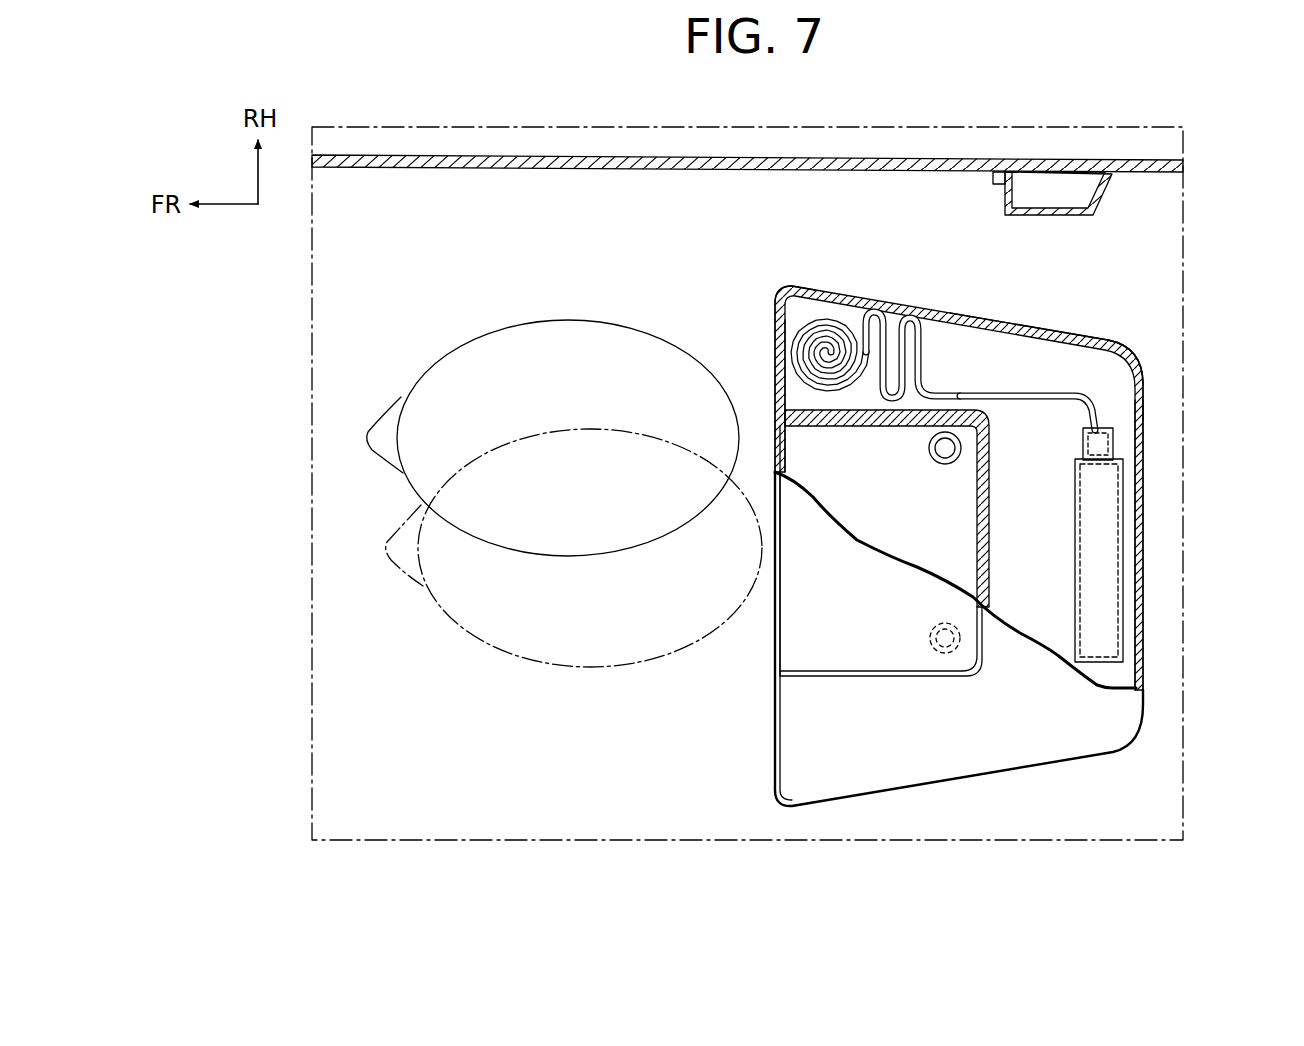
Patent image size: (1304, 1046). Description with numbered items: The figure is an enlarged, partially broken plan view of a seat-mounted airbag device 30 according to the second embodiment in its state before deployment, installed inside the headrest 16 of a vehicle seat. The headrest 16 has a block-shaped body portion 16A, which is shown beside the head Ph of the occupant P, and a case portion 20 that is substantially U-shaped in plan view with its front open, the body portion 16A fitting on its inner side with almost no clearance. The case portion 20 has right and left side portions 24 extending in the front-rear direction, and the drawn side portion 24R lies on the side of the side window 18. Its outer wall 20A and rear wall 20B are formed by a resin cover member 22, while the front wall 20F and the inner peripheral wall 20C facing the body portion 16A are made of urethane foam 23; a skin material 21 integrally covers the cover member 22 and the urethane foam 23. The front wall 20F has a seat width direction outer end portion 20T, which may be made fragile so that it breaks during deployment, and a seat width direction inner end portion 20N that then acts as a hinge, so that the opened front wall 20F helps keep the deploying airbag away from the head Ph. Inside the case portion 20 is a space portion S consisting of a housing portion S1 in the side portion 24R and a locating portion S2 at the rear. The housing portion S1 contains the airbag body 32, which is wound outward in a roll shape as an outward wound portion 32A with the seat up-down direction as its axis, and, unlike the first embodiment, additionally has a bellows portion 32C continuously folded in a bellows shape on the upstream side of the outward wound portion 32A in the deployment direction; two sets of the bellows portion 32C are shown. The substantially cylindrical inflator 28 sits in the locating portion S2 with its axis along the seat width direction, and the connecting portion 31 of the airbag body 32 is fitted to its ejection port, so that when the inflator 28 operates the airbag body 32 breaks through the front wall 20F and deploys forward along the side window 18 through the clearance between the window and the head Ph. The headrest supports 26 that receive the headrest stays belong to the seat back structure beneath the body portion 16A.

The headrest 16 is at (1124, 759).
The body portion 16A is at (797, 620).
The side window 18 is at (933, 158).
The case portion 20 is at (1053, 769).
The outer wall 20A is at (1068, 378).
The rear wall 20B is at (1144, 500).
The inner peripheral wall 20C is at (977, 543).
The front wall 20F is at (777, 335).
The seat width direction inner end portion 20N is at (778, 415).
The seat width direction outer end portion 20T is at (777, 300).
The skin material 21 is at (933, 770).
The cover member 22 is at (1138, 393).
The urethane foam 23 is at (990, 517).
The side portion 24 is at (776, 806).
The side portion on the side window side 24R is at (777, 288).
The headrest support 26 is at (943, 466).
The inflator 28 is at (1103, 632).
The seat-mounted airbag device 30 is at (1032, 412).
The connecting portion 31 is at (1100, 445).
The airbag body 32 is at (992, 388).
The outward wound portion 32A is at (828, 350).
The bellows portion 32C is at (922, 355).
The occupant P is at (455, 338).
The head Ph is at (610, 360).
The space portion S is at (1060, 340).
The housing portion S1 is at (962, 360).
The locating portion S2 is at (1052, 548).